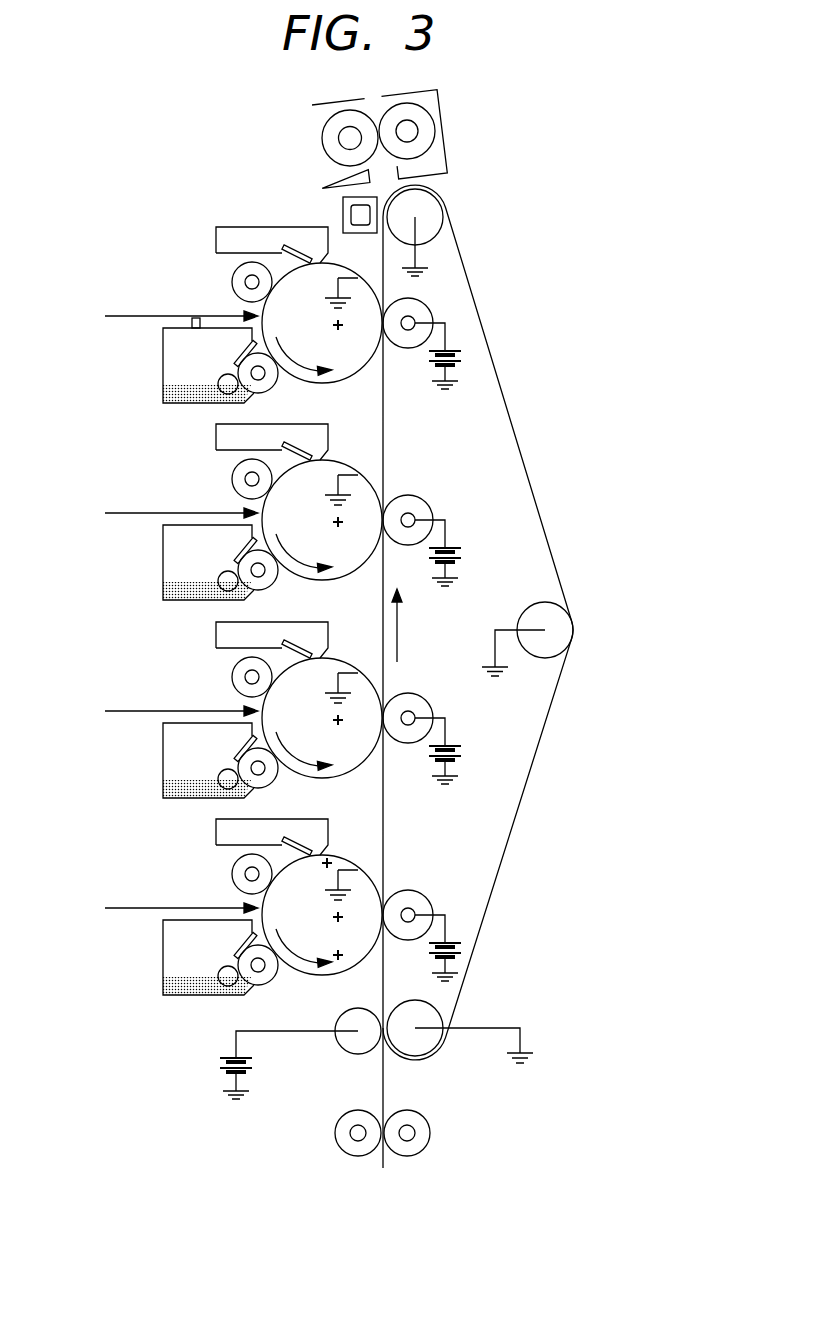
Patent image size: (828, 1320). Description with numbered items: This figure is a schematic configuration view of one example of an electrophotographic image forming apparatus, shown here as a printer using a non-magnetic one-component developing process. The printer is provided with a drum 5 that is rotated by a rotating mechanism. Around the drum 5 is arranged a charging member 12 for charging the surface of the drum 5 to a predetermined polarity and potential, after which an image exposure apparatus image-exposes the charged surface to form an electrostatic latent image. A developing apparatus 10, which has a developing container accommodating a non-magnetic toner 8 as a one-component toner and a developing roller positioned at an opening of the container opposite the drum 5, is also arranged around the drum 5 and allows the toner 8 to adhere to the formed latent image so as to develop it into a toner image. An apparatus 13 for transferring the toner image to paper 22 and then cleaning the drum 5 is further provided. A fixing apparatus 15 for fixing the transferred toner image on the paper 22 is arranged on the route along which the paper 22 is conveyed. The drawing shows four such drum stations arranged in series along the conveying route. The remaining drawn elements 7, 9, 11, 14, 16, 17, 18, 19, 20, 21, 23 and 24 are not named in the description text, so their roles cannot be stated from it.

The drum 5 is at (353, 372).
The toner supply roller 7 is at (228, 393).
The non-magnetic toner 8 is at (163, 398).
The developing roller with blade 9 is at (237, 353).
The developing apparatus 10 is at (163, 349).
The exposure light 11 is at (119, 315).
The charging member 12 is at (231, 283).
The apparatus for transferring a toner image and cleaning the drum 13 is at (215, 234).
The sensor 14 is at (343, 205).
The fixing apparatus 15 is at (447, 133).
The drive roller 16 is at (437, 212).
The transfer roller 17 is at (425, 303).
The transfer bias power source 18 is at (463, 353).
The tension roller 19 is at (575, 630).
The transfer belt 20 is at (537, 762).
The secondary transfer opposing roller 21 is at (430, 1047).
The paper 22 is at (385, 1087).
The registration rollers 23 is at (420, 1145).
The secondary transfer roller 24 is at (352, 1050).